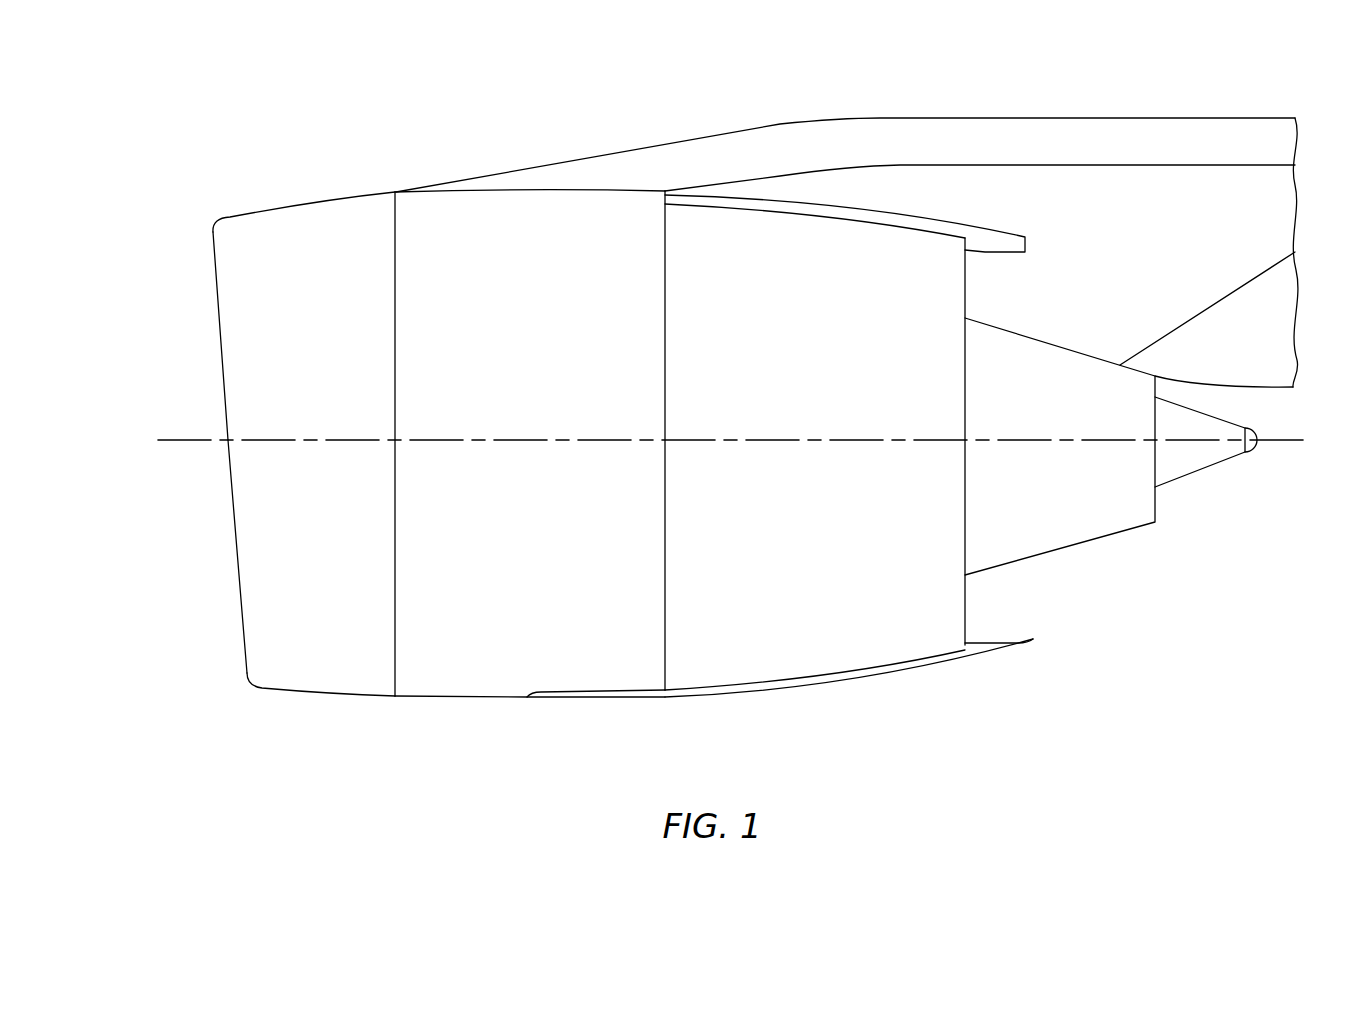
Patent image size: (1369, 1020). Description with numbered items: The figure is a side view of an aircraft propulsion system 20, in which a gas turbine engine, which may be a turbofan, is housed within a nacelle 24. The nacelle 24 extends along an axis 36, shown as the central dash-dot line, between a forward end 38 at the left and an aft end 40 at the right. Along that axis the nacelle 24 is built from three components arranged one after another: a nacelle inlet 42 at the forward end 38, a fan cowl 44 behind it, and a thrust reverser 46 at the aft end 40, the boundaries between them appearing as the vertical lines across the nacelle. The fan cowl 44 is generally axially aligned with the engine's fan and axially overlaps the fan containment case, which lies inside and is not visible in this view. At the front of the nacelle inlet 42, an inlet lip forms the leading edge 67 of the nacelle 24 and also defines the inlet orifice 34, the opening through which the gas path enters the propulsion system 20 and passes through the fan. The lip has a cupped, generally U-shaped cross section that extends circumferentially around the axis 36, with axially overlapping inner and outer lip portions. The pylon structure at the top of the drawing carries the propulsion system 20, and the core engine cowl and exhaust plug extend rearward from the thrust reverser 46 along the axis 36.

The aircraft propulsion system 20 is at (270, 98).
The nacelle 24 is at (455, 742).
The inlet orifice 34 is at (232, 608).
The axis 36 is at (170, 443).
The forward end 38 is at (246, 669).
The aft end 40 is at (1033, 640).
The nacelle inlet 42 is at (278, 222).
The fan cowl 44 is at (477, 200).
The thrust reverser 46 is at (768, 681).
The leading edge 67 is at (205, 333).